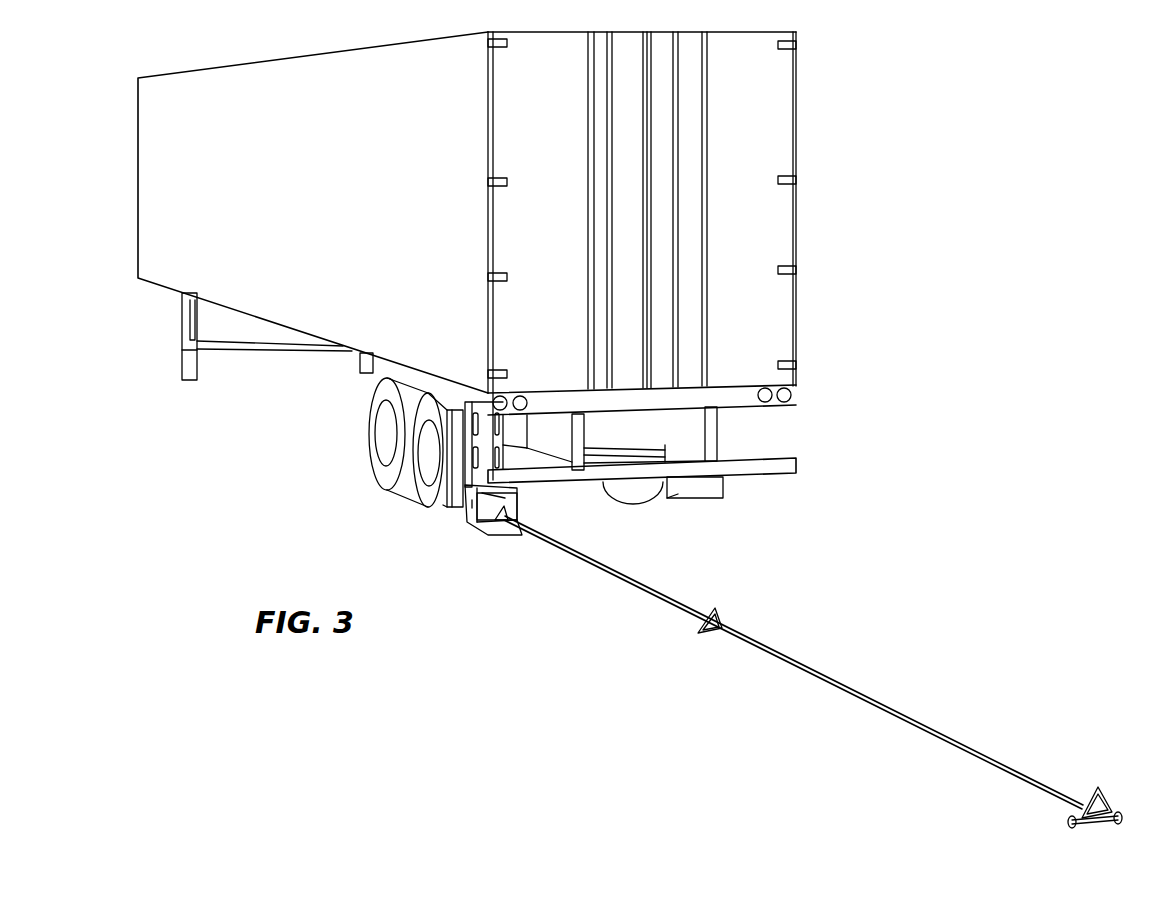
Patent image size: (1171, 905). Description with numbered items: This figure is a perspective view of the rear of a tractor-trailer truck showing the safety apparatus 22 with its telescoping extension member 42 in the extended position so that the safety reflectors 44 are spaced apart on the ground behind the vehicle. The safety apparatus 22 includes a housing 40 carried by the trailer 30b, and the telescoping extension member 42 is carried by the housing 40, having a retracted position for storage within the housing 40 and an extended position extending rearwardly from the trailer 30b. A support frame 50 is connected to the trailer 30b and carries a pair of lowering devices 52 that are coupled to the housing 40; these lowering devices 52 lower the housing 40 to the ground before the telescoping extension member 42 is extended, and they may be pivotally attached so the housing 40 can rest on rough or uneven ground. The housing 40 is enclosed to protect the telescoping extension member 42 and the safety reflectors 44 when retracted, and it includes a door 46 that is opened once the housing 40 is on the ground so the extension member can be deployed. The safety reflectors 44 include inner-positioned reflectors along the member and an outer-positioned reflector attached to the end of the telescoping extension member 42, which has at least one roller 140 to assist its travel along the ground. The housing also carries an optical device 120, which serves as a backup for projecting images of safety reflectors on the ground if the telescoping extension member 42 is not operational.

The trailer 30b is at (215, 66).
The safety apparatus 22 is at (457, 531).
The housing 40 is at (467, 512).
The telescoping extension member 42 is at (623, 583).
The safety reflectors 44 is at (509, 515).
The door 46 is at (497, 537).
The support frame 50 is at (465, 437).
The lowering devices 52 is at (496, 460).
The optical device 120 is at (507, 491).
The roller 140 is at (1107, 834).